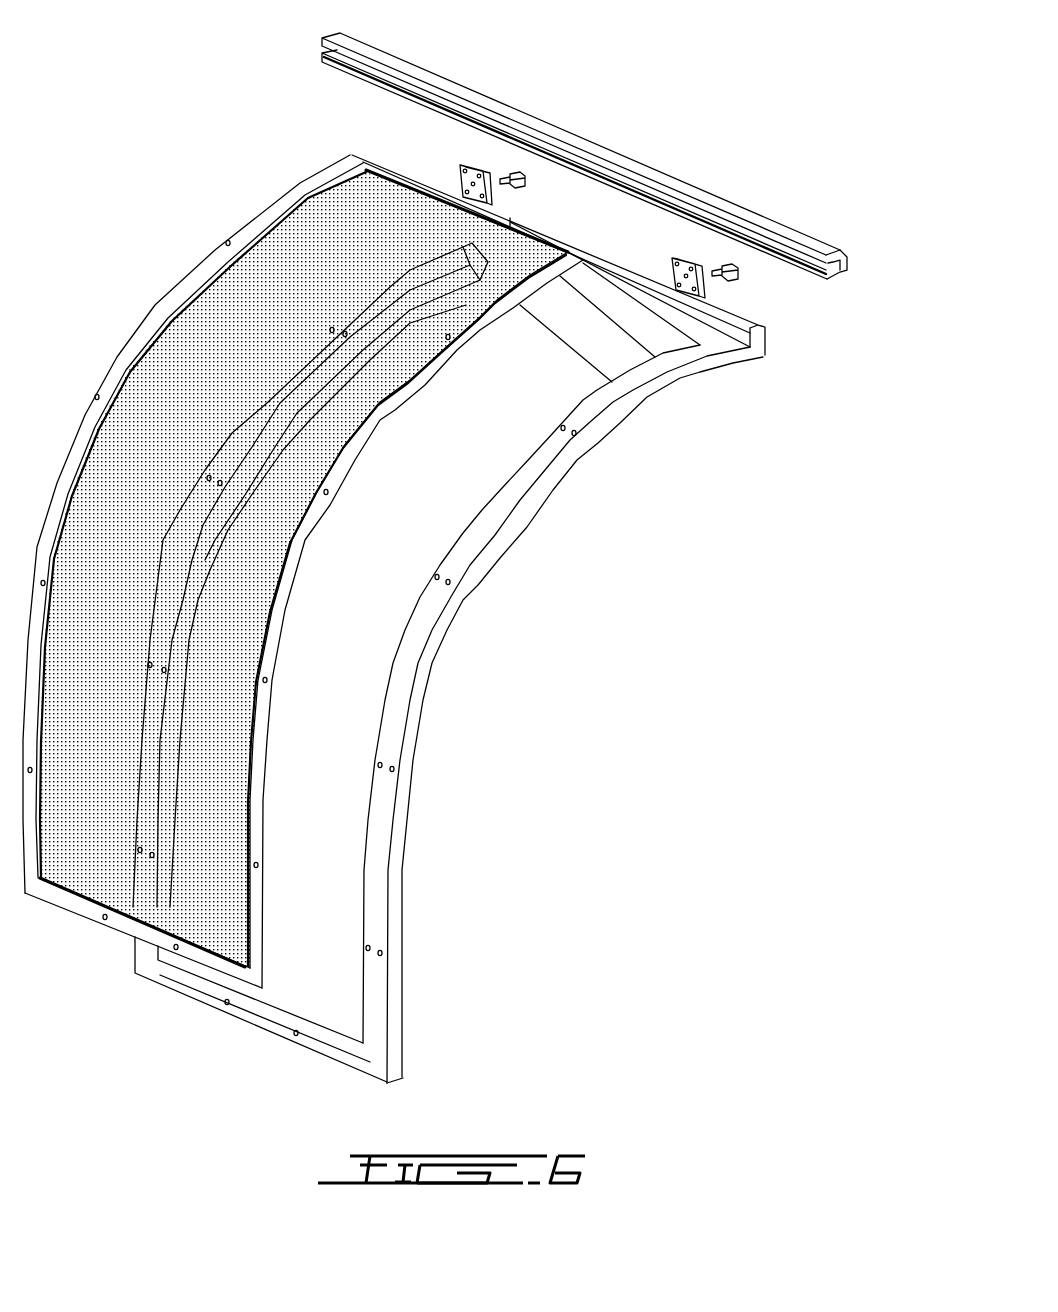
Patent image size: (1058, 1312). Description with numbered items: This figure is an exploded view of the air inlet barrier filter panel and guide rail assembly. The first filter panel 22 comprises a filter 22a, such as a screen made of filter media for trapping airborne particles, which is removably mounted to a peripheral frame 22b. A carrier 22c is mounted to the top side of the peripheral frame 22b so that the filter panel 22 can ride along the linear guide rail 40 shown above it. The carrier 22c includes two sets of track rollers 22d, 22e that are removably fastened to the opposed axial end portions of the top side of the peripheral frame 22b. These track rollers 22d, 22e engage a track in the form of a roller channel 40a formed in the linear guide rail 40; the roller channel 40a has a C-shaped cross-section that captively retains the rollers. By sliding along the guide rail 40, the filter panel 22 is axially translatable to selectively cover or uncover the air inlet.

The first filter panel 22 is at (458, 573).
The filter 22a is at (177, 333).
The peripheral frame 22b is at (402, 877).
The carrier 22c is at (337, 134).
The track rollers 22d is at (446, 164).
The track rollers 22e is at (752, 284).
The linear guide rail 40 is at (625, 161).
The roller channel 40a is at (848, 262).